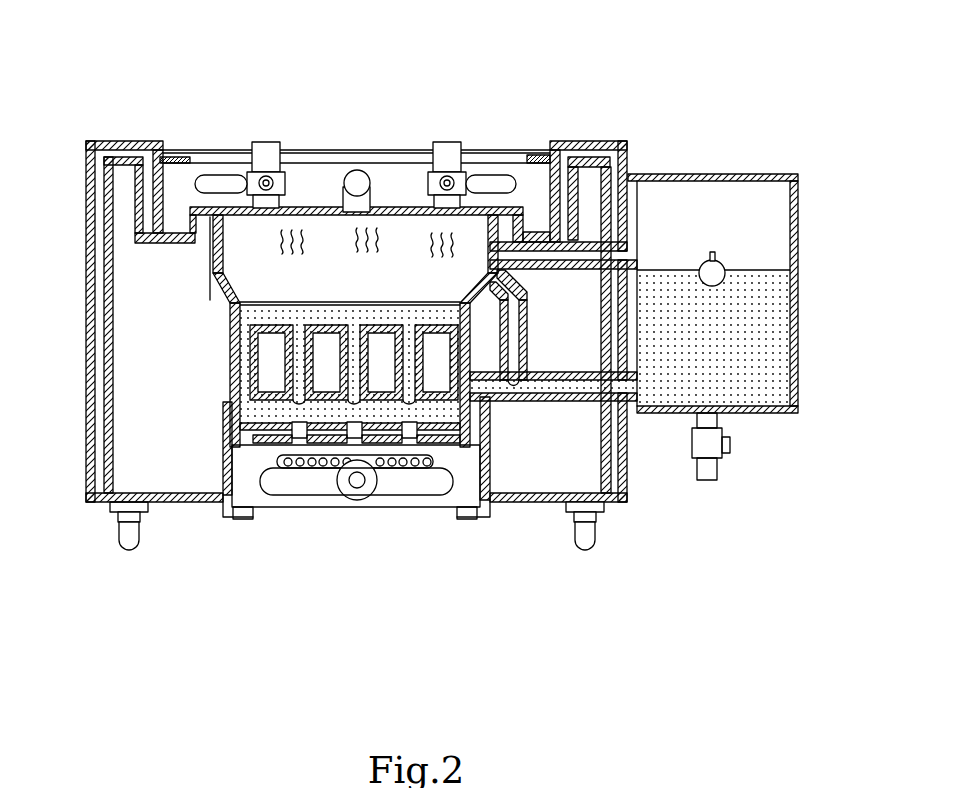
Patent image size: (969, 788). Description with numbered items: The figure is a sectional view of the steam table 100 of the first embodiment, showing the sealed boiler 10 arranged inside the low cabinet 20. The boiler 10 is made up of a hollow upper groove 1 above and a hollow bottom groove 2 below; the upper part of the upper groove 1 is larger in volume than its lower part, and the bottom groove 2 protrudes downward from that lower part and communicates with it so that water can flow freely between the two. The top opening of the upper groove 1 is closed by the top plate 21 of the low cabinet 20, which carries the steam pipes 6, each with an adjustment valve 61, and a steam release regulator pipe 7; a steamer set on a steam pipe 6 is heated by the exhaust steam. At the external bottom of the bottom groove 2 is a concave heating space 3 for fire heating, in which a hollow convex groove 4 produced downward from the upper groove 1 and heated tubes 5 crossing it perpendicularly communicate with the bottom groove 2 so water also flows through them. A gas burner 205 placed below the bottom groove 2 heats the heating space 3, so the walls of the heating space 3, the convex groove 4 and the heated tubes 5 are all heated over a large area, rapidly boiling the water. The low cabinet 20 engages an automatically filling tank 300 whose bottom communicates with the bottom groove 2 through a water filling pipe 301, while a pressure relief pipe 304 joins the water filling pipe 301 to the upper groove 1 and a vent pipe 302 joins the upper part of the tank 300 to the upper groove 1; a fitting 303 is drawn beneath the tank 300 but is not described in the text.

The steam table 100 is at (654, 108).
The boiler 10 is at (62, 265).
The upper groove 1 is at (213, 273).
The bottom groove 2 is at (213, 388).
The low cabinet 20 is at (92, 192).
The top plate 21 is at (400, 205).
The heating space 3 is at (326, 436).
The convex groove 4 is at (353, 438).
The heated tube 5 is at (277, 436).
The steam pipe 6 is at (268, 140).
The adjustment valve 61 is at (207, 193).
The steam release regulator pipe 7 is at (353, 172).
The gas burner 205 is at (437, 485).
The automatically filling tank 300 is at (768, 413).
The water filling pipe 301 is at (572, 402).
The vent pipe 302 is at (592, 245).
The drain valve 303 is at (724, 447).
The pressure relief pipe 304 is at (527, 357).